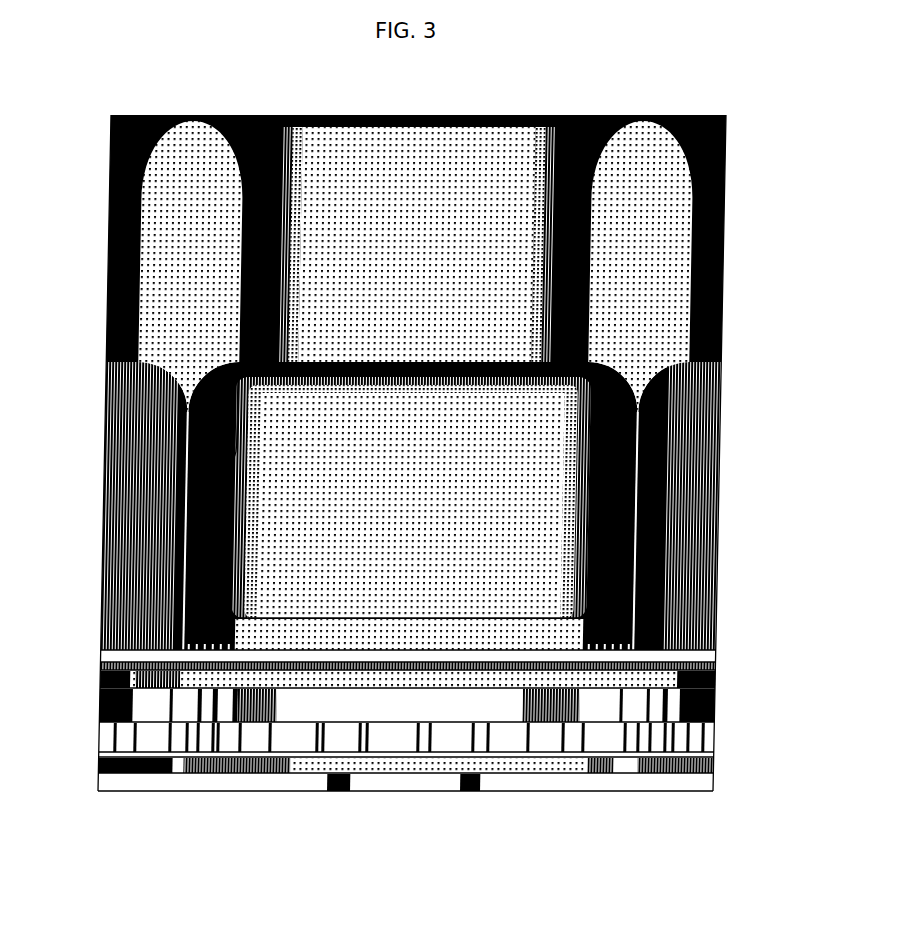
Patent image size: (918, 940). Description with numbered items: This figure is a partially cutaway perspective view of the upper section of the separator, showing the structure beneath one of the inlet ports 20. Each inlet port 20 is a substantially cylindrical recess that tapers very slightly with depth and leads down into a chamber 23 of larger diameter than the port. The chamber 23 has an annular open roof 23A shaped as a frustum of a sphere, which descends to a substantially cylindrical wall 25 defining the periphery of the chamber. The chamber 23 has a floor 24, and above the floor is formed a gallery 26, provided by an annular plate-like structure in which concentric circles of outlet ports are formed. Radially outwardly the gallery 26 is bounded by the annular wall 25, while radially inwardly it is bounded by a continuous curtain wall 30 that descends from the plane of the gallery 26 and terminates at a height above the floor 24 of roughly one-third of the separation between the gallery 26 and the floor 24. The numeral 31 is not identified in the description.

The inlet port 20 is at (690, 310).
The chamber 23 is at (483, 420).
The annular open roof 23A is at (178, 476).
The cylindrical wall 25 is at (510, 500).
The gap between body and surrounding layer 31 is at (227, 623).
The gallery 26 is at (585, 635).
The curtain wall 30 is at (367, 643).
The floor 24 is at (466, 741).